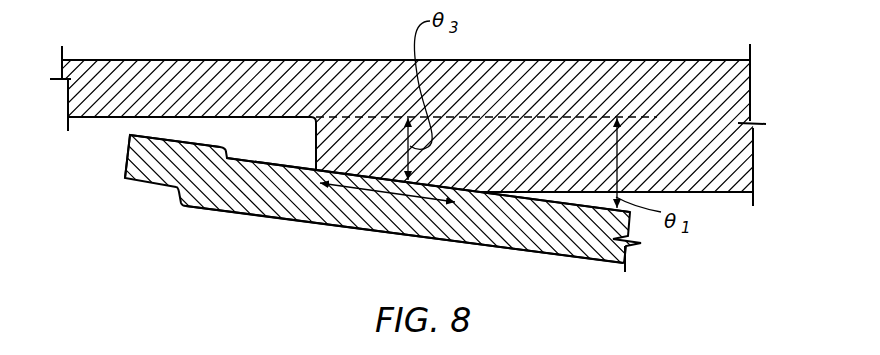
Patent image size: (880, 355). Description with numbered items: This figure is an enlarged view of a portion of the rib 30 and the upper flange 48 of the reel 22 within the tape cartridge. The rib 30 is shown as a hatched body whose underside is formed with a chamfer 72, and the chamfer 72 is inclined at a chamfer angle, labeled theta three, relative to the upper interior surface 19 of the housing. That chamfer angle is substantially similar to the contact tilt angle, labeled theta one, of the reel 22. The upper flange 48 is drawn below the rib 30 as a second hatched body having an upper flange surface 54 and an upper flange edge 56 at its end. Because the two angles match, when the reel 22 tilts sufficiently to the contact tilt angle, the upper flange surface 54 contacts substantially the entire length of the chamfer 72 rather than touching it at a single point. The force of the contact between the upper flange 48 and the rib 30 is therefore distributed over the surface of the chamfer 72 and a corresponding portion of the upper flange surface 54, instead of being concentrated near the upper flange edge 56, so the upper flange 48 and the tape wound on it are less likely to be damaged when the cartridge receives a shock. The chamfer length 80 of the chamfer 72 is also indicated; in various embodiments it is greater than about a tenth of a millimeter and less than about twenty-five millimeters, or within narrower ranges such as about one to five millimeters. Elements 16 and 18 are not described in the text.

The plate 16 is at (291, 57).
The top surface of plate 18 is at (218, 60).
The upper interior surface 19 is at (167, 117).
The reel 22 is at (294, 219).
The rib 30 is at (471, 170).
The upper flange 48 is at (453, 241).
The upper flange surface 54 is at (590, 207).
The upper flange edge 56 is at (137, 148).
The chamfer 72 is at (350, 173).
The chamfer length 80 is at (391, 191).